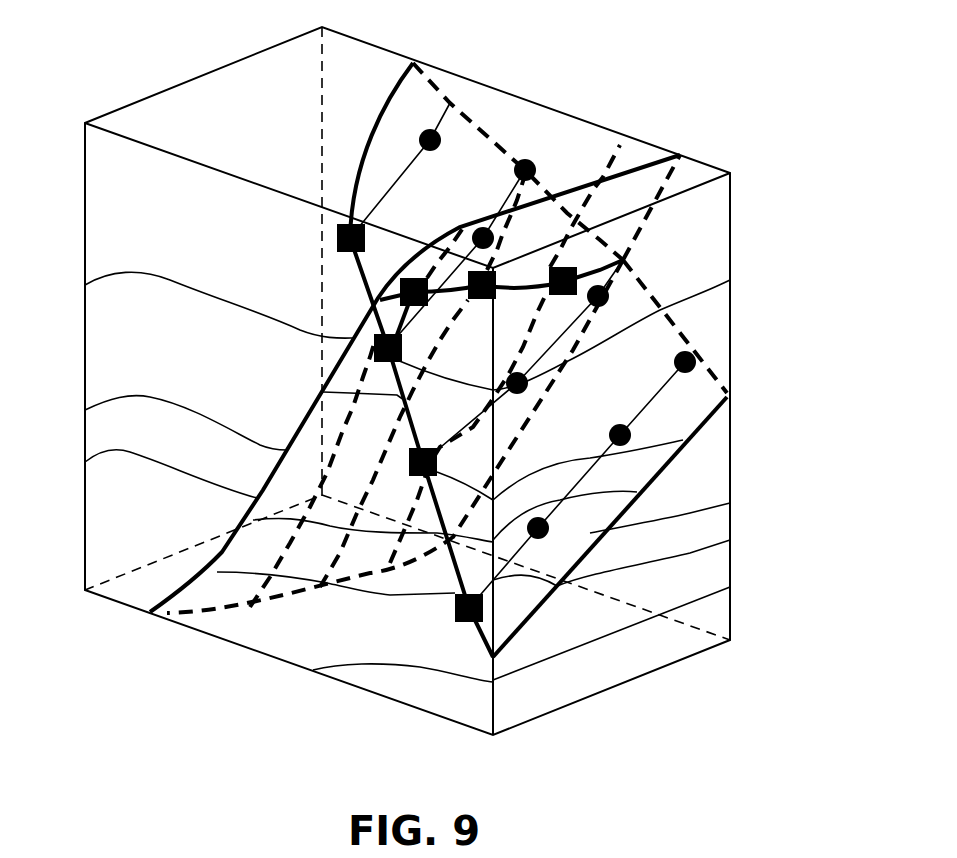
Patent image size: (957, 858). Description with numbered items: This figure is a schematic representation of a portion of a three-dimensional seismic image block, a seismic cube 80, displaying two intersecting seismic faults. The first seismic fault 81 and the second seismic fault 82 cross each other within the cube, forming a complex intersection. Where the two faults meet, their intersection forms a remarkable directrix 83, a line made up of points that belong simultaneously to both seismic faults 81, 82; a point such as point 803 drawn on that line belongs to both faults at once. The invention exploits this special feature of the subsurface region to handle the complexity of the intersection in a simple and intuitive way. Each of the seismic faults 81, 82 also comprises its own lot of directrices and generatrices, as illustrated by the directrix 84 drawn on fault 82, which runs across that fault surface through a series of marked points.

The seismic cube 80 is at (558, 55).
The seismic fault 81 is at (166, 596).
The seismic fault 82 is at (527, 630).
The directrix 83 is at (537, 281).
The control point 803 is at (565, 268).
The directrix 84 is at (668, 392).